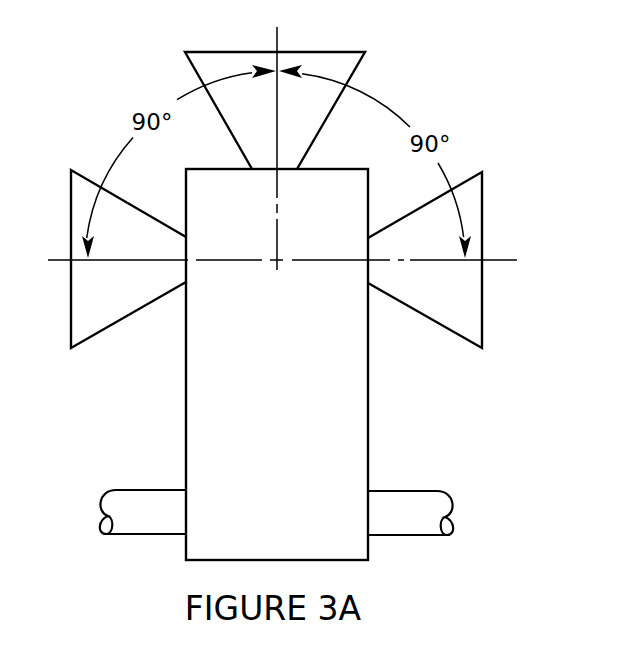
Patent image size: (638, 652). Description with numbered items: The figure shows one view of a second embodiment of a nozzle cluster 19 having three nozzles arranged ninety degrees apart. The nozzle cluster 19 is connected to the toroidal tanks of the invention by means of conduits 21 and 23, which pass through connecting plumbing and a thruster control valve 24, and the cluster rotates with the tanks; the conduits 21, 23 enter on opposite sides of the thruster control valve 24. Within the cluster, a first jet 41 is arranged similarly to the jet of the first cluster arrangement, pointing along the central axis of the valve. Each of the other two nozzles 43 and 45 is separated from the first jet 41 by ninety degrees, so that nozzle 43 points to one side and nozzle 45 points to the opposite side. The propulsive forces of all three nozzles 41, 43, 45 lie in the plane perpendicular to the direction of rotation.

The nozzle cluster 19 is at (262, 18).
The conduit 21 is at (138, 500).
The conduit 23 is at (420, 501).
The thruster control valve 24 is at (330, 537).
The first jet 41 is at (320, 62).
The nozzle 43 is at (95, 310).
The nozzle 45 is at (473, 223).